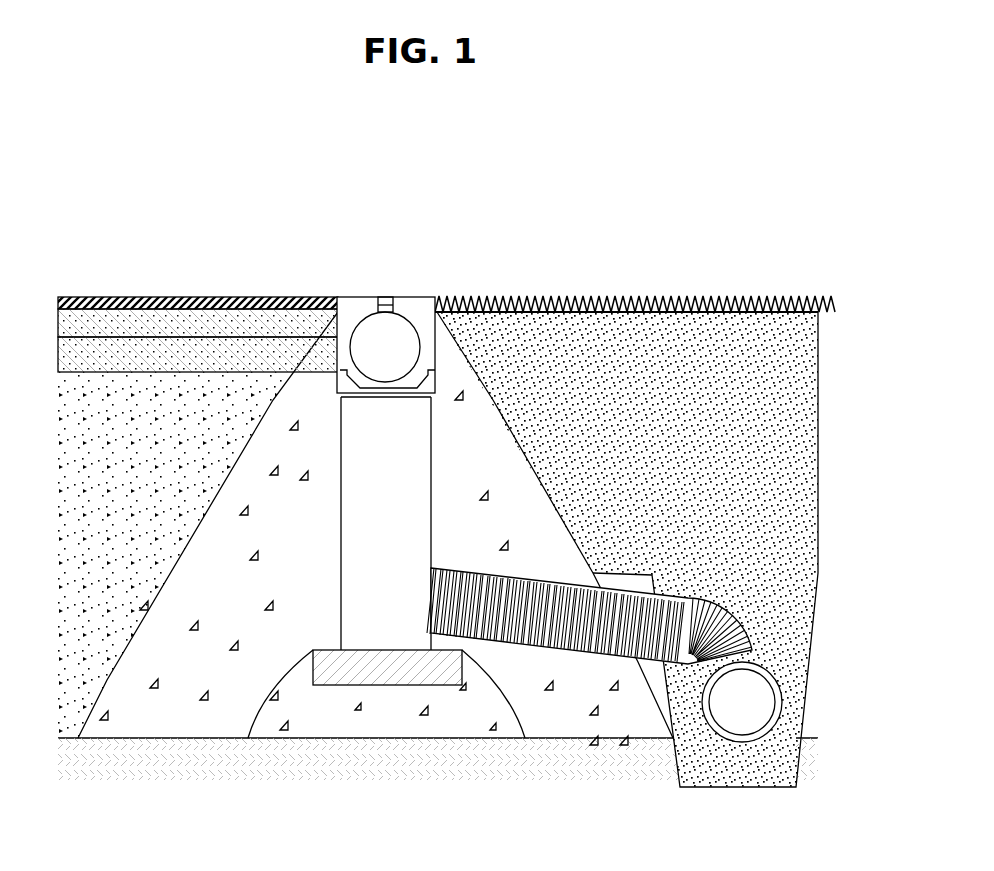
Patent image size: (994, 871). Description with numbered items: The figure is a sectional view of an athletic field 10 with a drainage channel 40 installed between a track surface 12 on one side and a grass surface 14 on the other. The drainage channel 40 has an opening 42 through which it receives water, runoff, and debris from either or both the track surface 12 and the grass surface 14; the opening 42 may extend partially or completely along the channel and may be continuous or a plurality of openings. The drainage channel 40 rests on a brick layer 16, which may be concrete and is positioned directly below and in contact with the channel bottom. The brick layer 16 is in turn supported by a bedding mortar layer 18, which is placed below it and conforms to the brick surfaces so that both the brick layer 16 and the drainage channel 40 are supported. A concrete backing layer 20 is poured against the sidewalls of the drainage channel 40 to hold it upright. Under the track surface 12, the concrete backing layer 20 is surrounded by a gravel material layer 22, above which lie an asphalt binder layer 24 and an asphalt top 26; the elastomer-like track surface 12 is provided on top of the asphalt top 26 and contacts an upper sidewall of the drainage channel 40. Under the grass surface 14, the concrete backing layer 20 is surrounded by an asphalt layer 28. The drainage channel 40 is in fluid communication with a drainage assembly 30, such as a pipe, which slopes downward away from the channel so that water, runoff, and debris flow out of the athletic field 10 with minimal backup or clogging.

The athletic field 10 is at (185, 176).
The track surface 12 is at (257, 300).
The grass surface 14 is at (493, 297).
The brick layer 16 is at (337, 676).
The bedding mortar layer 18 is at (372, 718).
The concrete backing layer 20 is at (177, 690).
The gravel material layer 22 is at (83, 652).
The asphalt binder layer 24 is at (72, 357).
The asphalt top 26 is at (93, 322).
The asphalt layer 28 is at (700, 340).
The drainage assembly 30 is at (553, 648).
The drainage channel 40 is at (352, 297).
The opening 42 is at (388, 297).